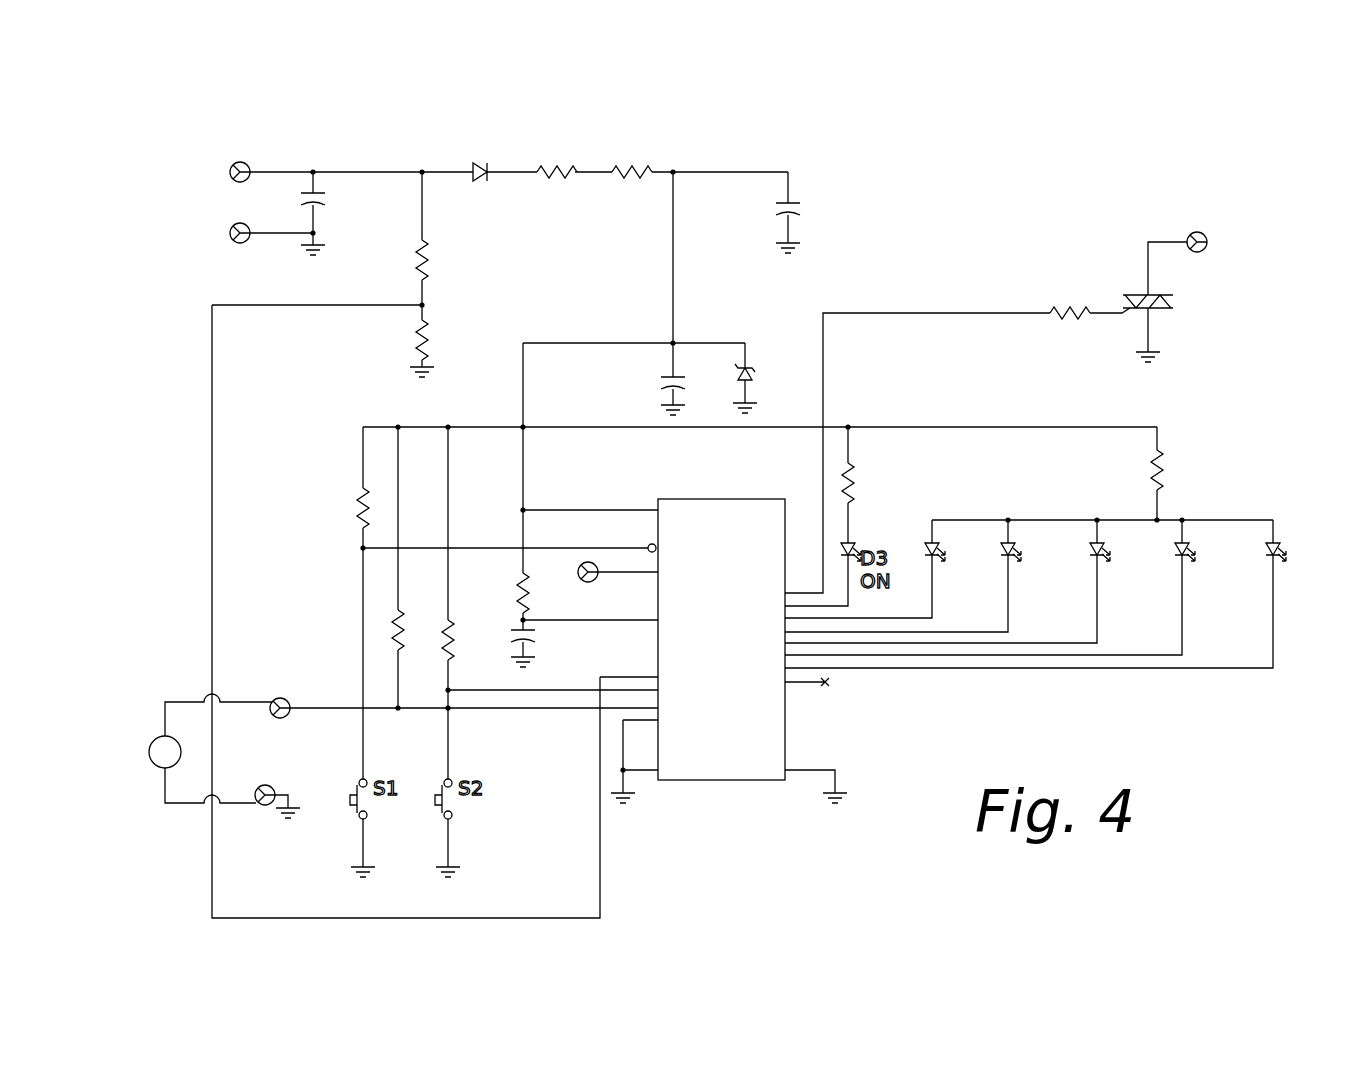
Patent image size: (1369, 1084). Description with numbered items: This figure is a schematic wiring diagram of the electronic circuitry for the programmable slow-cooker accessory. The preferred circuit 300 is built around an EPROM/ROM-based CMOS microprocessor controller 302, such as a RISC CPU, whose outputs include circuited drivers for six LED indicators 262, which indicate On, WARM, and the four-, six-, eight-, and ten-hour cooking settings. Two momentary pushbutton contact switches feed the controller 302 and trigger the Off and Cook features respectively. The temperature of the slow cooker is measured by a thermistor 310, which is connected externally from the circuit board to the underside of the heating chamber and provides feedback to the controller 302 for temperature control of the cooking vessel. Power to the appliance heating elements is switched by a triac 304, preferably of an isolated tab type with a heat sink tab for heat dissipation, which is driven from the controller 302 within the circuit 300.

The circuit 300 is at (1035, 205).
The microprocessor controller 302 is at (772, 725).
The triac 304 is at (1167, 320).
The thermistor 310 is at (150, 740).
The LED indicators 262 is at (1292, 588).